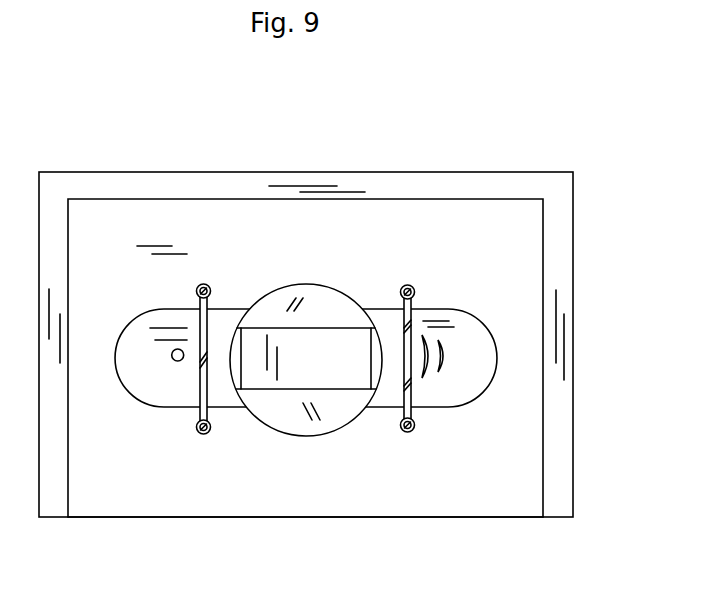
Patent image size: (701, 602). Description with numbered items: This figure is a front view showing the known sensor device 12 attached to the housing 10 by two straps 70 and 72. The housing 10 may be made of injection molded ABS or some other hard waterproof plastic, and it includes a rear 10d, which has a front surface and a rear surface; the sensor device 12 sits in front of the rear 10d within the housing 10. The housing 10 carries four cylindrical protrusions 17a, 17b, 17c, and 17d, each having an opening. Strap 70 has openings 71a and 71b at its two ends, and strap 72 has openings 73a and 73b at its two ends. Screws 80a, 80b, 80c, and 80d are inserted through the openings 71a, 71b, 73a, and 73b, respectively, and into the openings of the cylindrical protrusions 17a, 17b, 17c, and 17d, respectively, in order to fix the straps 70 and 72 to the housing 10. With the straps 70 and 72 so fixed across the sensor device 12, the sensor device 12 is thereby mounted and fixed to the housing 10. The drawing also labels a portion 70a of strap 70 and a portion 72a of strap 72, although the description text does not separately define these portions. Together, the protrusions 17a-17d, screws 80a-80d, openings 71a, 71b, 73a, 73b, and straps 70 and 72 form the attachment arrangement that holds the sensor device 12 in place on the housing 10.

The housing 10 is at (437, 167).
The rear 10d is at (290, 493).
The sensor device 12 is at (302, 278).
The cylindrical protrusion 17a is at (196, 291).
The cylindrical protrusion 17b is at (414, 288).
The cylindrical protrusion 17c is at (196, 427).
The cylindrical protrusion 17d is at (415, 424).
The strap 70 is at (172, 388).
The first bracket body portion 70a is at (200, 384).
The opening 71a is at (207, 286).
The opening 71b is at (210, 431).
The strap 72 is at (438, 385).
The second bracket body portion 72a is at (412, 390).
The opening 73a is at (415, 292).
The opening 73b is at (413, 429).
The screw 80a is at (210, 289).
The screw 80b is at (211, 428).
The screw 80c is at (401, 287).
The screw 80d is at (403, 431).